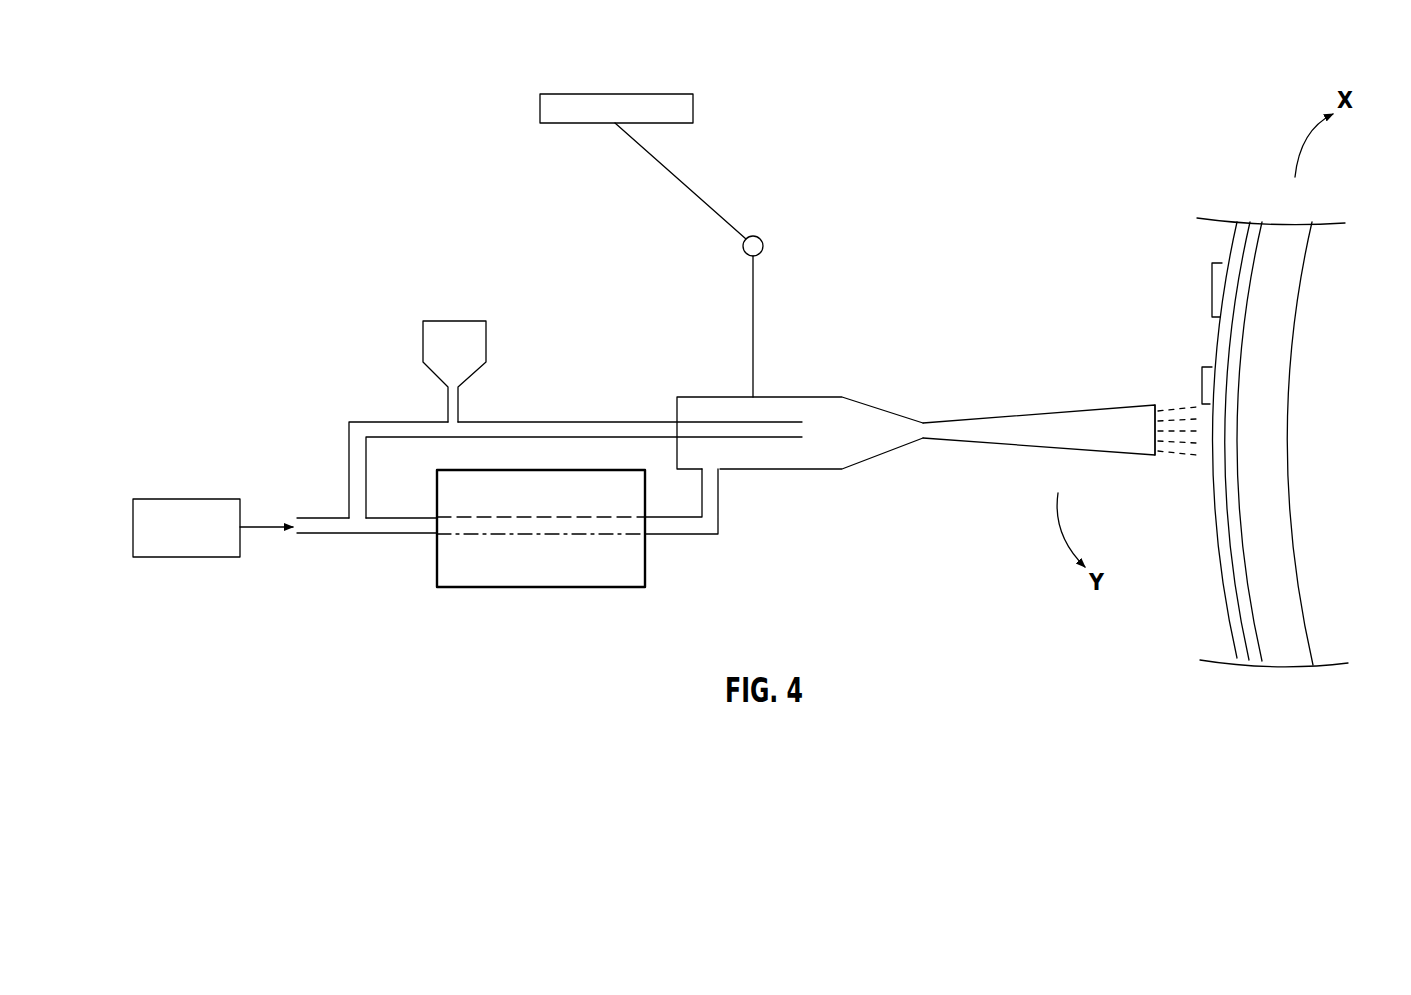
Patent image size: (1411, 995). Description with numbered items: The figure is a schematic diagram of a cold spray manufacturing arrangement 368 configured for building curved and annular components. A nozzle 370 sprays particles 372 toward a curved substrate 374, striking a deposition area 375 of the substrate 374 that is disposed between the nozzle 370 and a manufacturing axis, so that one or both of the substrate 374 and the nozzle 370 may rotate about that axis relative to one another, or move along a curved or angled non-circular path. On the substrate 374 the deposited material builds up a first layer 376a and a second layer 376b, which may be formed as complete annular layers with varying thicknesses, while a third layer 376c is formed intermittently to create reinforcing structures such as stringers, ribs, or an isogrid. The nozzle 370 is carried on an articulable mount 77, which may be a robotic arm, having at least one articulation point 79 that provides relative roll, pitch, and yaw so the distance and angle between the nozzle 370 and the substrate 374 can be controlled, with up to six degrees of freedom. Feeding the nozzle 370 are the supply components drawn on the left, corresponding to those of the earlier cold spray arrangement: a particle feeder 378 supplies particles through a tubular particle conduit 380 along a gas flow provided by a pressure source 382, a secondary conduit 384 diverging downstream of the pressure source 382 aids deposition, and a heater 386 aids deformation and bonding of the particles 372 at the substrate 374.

The articulable mount 77 is at (795, 165).
The articulation point 79 is at (746, 252).
The cold spray manufacturing arrangement 368 is at (930, 222).
The nozzle 370 is at (931, 405).
The particles 372 is at (1165, 400).
The substrate 374 is at (1296, 272).
The deposition area 375 is at (1183, 467).
The first layer 376a is at (1248, 237).
The second layer 376b is at (1225, 340).
The third layer 376c is at (1217, 278).
The powder hopper 378 is at (470, 342).
The feed conduit 380 is at (577, 427).
The gas supply 382 is at (200, 548).
The supply lines 384 is at (363, 522).
The heater / power source 386 is at (543, 572).